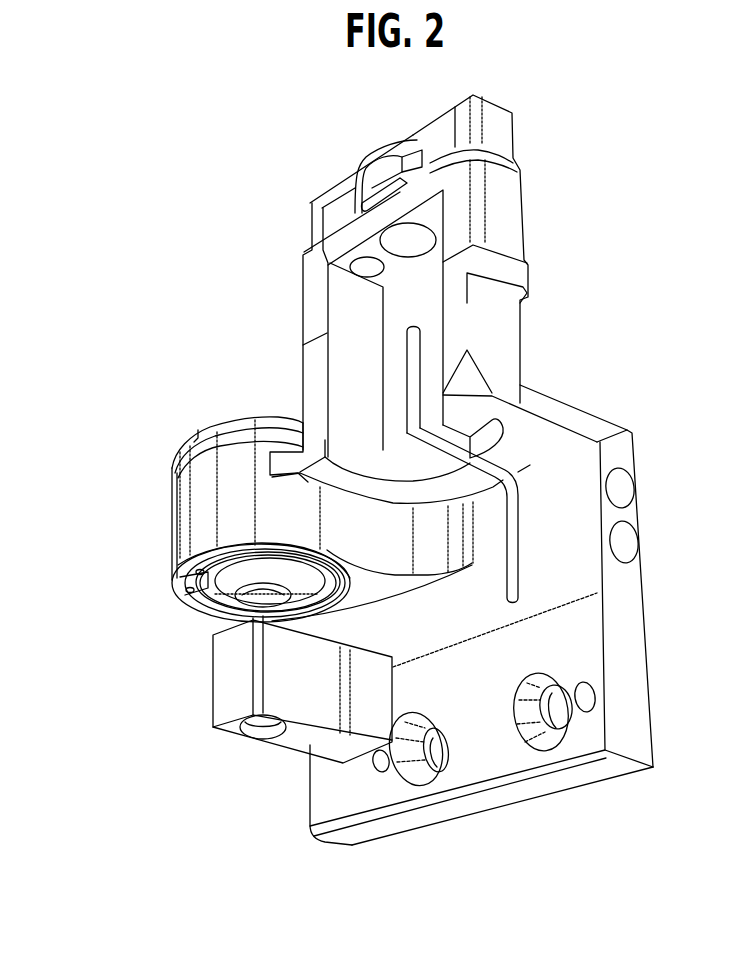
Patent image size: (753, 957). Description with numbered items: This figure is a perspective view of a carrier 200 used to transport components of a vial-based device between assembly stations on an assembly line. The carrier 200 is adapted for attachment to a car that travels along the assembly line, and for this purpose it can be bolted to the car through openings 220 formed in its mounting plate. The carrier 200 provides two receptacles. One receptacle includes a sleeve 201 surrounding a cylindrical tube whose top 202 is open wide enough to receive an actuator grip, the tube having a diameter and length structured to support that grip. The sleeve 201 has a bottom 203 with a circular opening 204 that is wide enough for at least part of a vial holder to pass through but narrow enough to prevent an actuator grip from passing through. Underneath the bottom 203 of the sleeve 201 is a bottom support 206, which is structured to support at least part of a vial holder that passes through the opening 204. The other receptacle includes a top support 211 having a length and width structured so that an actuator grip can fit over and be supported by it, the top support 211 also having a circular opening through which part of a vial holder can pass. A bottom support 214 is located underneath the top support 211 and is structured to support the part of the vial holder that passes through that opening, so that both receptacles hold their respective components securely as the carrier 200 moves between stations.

The carrier 200 is at (158, 200).
The sleeve 201 is at (170, 512).
The top 202 is at (255, 420).
The bottom 203 is at (242, 610).
The circular opening 204 is at (247, 613).
The bottom support 206 is at (213, 705).
The top support 211 is at (440, 114).
The bottom support 214 is at (521, 343).
The openings 220 is at (410, 767).